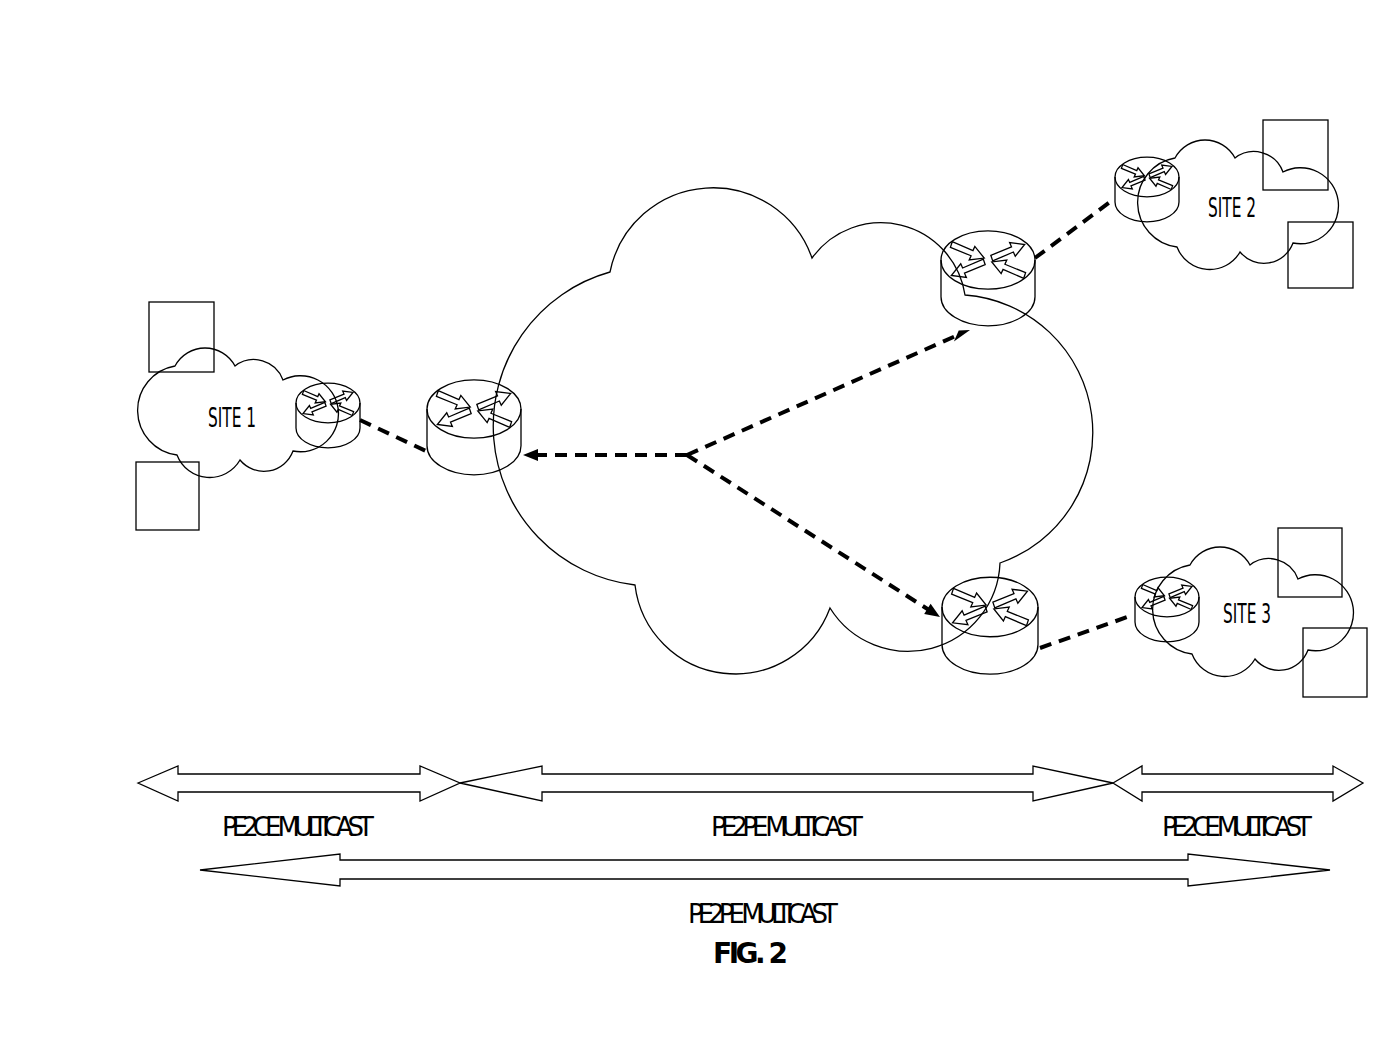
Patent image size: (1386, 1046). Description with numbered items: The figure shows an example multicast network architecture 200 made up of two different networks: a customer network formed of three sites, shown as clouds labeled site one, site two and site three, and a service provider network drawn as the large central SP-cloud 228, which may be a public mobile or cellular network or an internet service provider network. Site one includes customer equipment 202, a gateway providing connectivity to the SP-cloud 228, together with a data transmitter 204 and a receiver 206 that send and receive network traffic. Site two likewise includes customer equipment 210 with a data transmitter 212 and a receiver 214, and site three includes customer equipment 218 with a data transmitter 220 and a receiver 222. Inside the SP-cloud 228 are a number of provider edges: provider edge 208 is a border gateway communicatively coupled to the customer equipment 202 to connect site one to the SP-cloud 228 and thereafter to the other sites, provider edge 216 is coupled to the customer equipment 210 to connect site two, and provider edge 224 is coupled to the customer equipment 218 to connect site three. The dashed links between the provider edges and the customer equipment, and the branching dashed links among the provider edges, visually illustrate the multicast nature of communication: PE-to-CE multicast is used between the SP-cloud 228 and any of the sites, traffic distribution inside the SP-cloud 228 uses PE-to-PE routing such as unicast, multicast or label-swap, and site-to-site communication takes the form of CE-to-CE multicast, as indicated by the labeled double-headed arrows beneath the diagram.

The multicast network architecture 200 is at (846, 146).
The customer equipment 202 is at (343, 487).
The data transmitter 204 is at (203, 301).
The receiver 206 is at (185, 532).
The provider edge 208 is at (489, 520).
The customer equipment 210 is at (1162, 262).
The data transmitter 212 is at (1326, 120).
The receiver 214 is at (1300, 288).
The provider edge 216 is at (1003, 367).
The customer equipment 218 is at (1182, 680).
The data transmitter 220 is at (1292, 528).
The receiver 222 is at (1313, 697).
The provider edge 224 is at (1005, 712).
The SP-cloud 228 is at (653, 627).